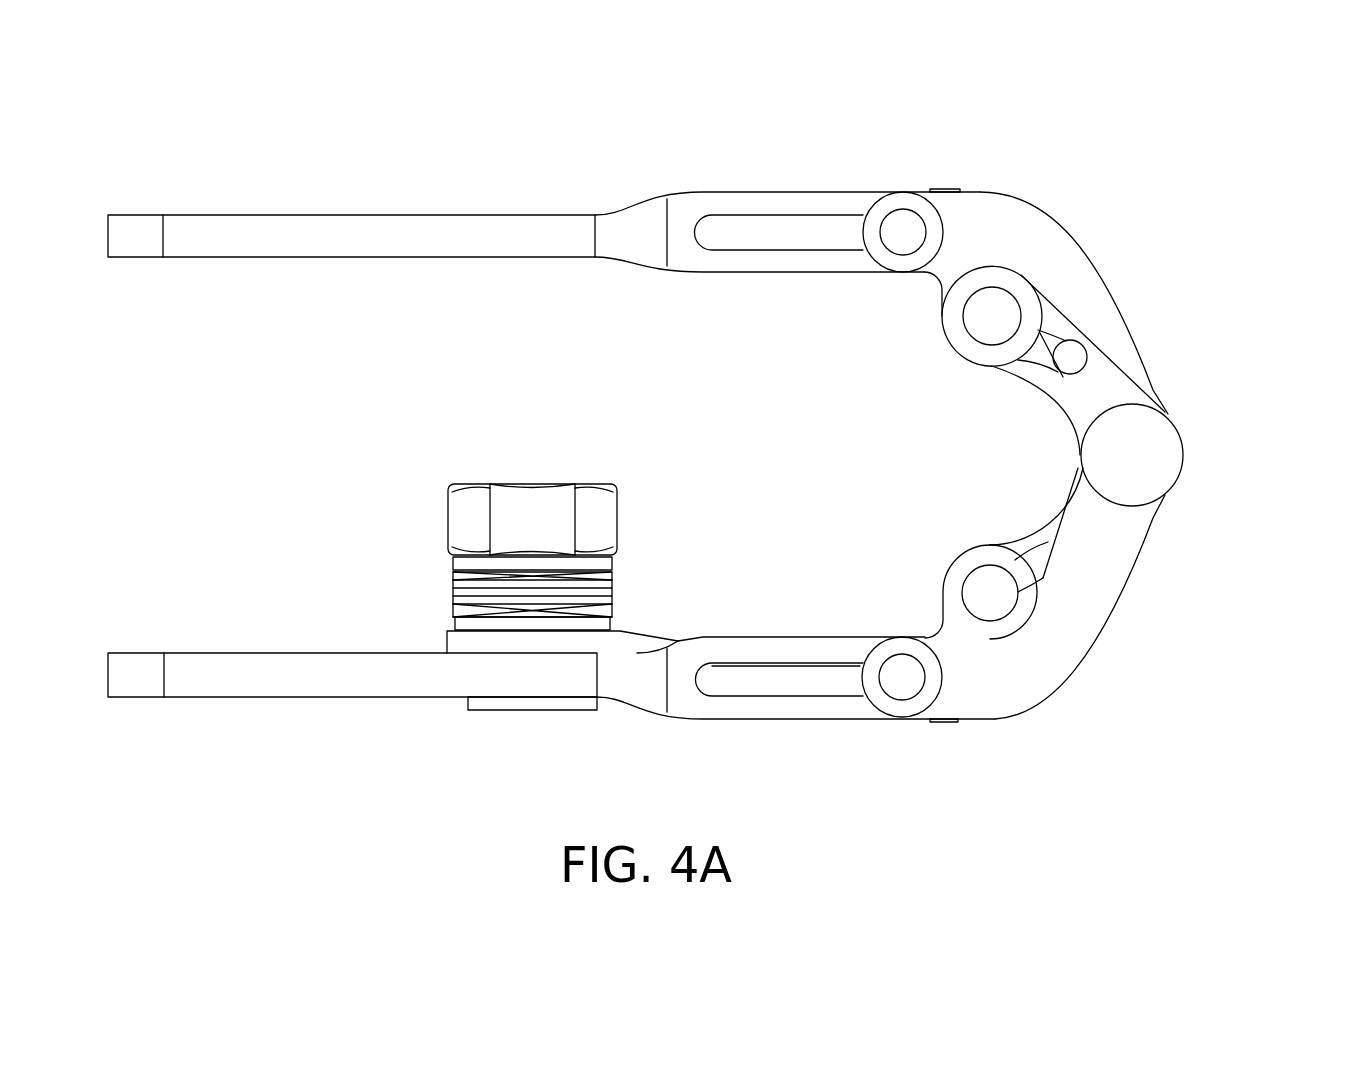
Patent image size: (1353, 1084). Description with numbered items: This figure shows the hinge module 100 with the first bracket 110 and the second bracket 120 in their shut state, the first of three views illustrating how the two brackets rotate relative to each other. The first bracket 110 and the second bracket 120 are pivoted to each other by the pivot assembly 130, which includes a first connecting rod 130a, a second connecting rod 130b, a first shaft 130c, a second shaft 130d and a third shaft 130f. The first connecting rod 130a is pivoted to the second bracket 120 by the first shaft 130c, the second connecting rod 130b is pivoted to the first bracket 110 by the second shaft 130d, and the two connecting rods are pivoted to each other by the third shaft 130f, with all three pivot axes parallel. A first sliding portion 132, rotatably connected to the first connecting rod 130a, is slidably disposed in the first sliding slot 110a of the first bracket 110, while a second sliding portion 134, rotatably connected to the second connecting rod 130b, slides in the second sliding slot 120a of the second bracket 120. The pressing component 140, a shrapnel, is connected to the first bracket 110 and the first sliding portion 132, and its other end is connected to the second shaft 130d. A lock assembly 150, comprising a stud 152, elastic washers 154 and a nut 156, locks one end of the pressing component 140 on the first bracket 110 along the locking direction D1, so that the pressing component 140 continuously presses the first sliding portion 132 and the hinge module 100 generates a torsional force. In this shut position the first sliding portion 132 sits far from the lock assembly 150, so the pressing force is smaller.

The hinge module 100 is at (703, 473).
The first bracket 110 is at (268, 688).
The first sliding slot 110a is at (770, 698).
The second bracket 120 is at (327, 232).
The second sliding slot 120a is at (757, 212).
The pivot assembly 130 is at (1080, 457).
The first connecting rod 130a is at (1065, 630).
The second connecting rod 130b is at (1040, 233).
The first shaft 130c is at (1010, 316).
The second shaft 130d is at (988, 600).
The third shaft 130f is at (1135, 470).
The first sliding portion 132 is at (903, 678).
The second sliding portion 134 is at (903, 232).
The pressing component 140 is at (640, 636).
The lock assembly 150 is at (491, 575).
The stud 152 is at (532, 703).
The elastic washers 154 is at (463, 586).
The nut 156 is at (462, 520).
The tightening direction D1 is at (597, 443).